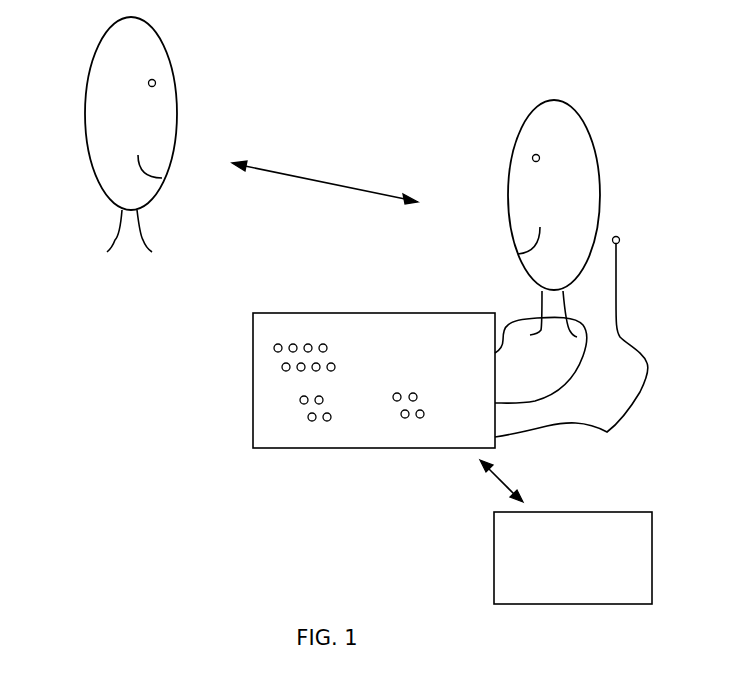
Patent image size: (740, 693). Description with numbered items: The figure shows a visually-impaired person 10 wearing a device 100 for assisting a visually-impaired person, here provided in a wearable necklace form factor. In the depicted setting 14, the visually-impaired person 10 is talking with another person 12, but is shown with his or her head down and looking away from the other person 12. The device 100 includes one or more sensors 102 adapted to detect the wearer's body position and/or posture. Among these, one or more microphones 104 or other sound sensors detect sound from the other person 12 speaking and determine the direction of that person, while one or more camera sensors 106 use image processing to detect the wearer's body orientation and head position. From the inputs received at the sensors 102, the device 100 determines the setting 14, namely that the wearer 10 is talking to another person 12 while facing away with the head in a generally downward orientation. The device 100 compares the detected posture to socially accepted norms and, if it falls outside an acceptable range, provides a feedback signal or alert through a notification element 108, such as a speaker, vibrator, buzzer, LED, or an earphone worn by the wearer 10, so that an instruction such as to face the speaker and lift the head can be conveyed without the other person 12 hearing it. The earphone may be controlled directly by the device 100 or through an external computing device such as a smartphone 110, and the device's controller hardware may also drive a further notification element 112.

The visually-impaired person 10 is at (592, 152).
The other person 12 is at (103, 191).
The setting 14 is at (360, 77).
The device 100 is at (246, 351).
The sensors 102 is at (272, 338).
The microphones 104 is at (282, 368).
The camera sensors 106 is at (311, 421).
The notification element 108 is at (620, 241).
The smartphone 110 is at (566, 532).
The notification element 112 is at (404, 418).